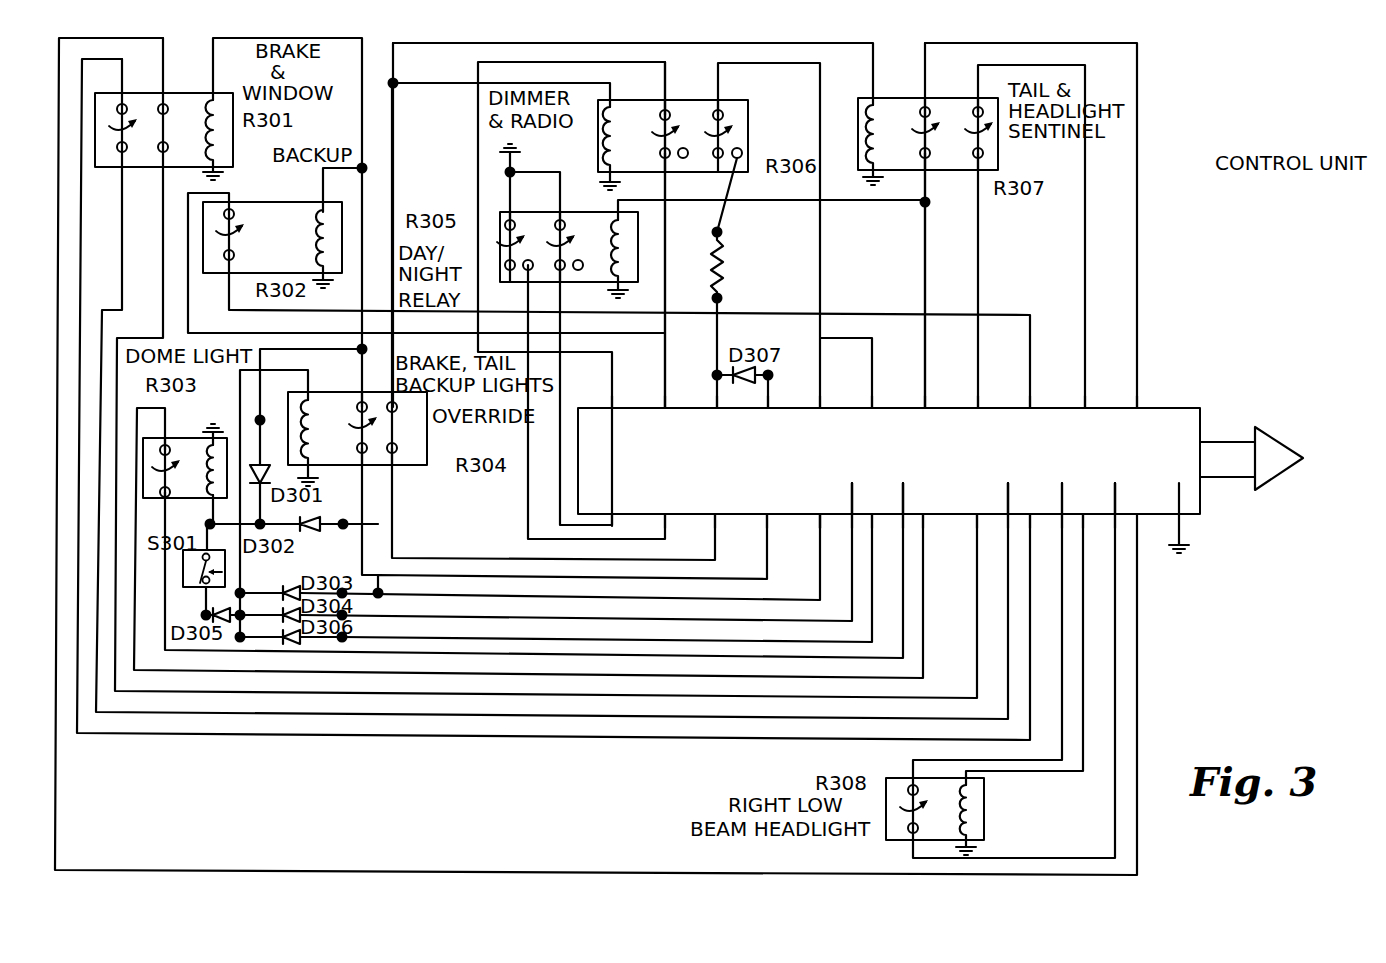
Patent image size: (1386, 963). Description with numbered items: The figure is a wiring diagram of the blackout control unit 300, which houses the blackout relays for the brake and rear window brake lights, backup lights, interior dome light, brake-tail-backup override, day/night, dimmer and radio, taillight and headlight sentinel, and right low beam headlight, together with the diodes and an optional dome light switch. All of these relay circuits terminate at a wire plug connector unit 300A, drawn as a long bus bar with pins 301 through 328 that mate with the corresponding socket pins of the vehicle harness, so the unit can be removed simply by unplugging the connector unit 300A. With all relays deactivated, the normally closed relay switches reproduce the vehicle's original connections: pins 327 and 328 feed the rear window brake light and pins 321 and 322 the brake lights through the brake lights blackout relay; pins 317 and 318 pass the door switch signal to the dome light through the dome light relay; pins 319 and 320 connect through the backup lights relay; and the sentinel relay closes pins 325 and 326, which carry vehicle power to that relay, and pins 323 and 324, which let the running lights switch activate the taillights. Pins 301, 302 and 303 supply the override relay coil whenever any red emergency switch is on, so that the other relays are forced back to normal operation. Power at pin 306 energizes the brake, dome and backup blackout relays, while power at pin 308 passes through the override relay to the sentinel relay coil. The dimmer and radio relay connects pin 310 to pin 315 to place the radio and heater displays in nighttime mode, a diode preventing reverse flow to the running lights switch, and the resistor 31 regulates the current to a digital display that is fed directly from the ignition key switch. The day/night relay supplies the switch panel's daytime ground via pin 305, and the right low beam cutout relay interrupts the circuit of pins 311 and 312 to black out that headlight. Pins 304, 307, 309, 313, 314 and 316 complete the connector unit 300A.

The blackout control unit 300 is at (1177, 163).
The wire plug connector unit 300A is at (1150, 407).
The resistor R31 31 is at (740, 265).
The pin 301 is at (821, 506).
The pin 302 is at (844, 490).
The pin 303 is at (873, 505).
The pin 304 is at (664, 506).
The pin 305 is at (611, 505).
The pin 306 is at (767, 506).
The pin 307 is at (1082, 505).
The pin 308 is at (716, 506).
The pin 309 is at (1179, 503).
The pin 310 is at (821, 417).
The pin 311 is at (1054, 490).
The pin 312 is at (1107, 490).
The pin 313 is at (611, 417).
The pin 314 is at (664, 417).
The pin 315 is at (716, 417).
The pin 316 is at (767, 417).
The pin 317 is at (897, 490).
The pin 318 is at (924, 505).
The pin 319 is at (872, 417).
The pin 320 is at (1029, 417).
The pin 321 is at (959, 506).
The pin 322 is at (1135, 505).
The pin 323 is at (1134, 417).
The pin 324 is at (924, 417).
The pin 325 is at (977, 417).
The pin 326 is at (1082, 417).
The pin 327 is at (1002, 490).
The pin 328 is at (1029, 505).